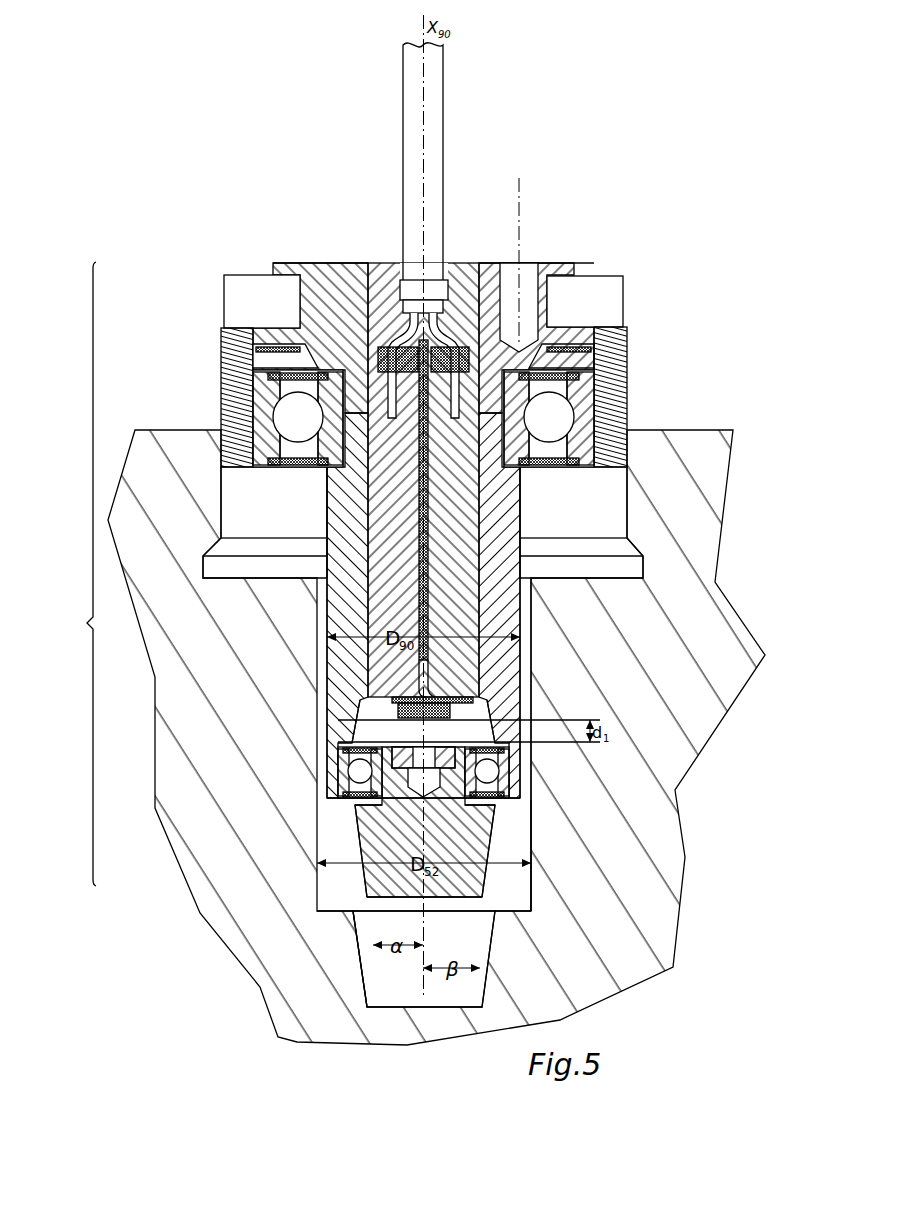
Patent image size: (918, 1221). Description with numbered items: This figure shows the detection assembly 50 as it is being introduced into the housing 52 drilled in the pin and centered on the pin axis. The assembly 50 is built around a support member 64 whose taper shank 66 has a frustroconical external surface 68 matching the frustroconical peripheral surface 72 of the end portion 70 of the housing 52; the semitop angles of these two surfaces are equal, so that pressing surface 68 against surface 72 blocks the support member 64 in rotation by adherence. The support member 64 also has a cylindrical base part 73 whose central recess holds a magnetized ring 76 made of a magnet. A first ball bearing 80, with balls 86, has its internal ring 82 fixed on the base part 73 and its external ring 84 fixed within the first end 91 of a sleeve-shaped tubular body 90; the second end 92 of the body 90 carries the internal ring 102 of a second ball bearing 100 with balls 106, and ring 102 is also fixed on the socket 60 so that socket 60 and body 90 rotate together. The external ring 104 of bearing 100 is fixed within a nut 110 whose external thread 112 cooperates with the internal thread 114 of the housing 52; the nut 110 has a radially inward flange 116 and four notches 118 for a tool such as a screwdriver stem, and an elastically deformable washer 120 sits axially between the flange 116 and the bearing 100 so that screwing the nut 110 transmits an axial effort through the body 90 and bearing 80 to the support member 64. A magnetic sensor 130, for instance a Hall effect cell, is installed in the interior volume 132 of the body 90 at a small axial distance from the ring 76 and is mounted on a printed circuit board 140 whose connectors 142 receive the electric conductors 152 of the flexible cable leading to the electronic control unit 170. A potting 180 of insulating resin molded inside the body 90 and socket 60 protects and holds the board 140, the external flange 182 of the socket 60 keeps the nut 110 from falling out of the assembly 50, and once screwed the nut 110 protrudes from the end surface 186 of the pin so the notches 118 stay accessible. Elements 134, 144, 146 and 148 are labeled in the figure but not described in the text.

The detection assembly 50 is at (80, 574).
The housing 52 is at (507, 857).
The socket 60 is at (548, 268).
The support member 64 is at (128, 838).
The taper shank 66 is at (355, 875).
The external surface 68 is at (355, 880).
The end portion 70 is at (455, 940).
The peripheral surface 72 is at (372, 990).
The cylindrical base part 73 is at (380, 842).
The magnetized ring 76 is at (560, 860).
The first ball bearing 80 is at (340, 762).
The internal ring 82 is at (365, 733).
The external ring 84 is at (500, 775).
The balls 86 is at (520, 800).
The tubular body 90 is at (520, 660).
The first end 91 is at (360, 800).
The second end 92 is at (270, 500).
The second ball bearing 100 is at (600, 383).
The internal ring 102 is at (310, 300).
The external ring 104 is at (245, 378).
The balls 106 is at (598, 398).
The nut 110 is at (240, 416).
The external thread 112 is at (622, 300).
The internal thread 114 is at (612, 500).
The flange 116 is at (596, 268).
The notches 118 is at (240, 300).
The elastically deformable washer 120 is at (258, 348).
The magnetic sensor 130 is at (345, 640).
The interior volume 132 is at (360, 690).
The nut 134 is at (430, 745).
The printed circuit board 140 is at (300, 558).
The connectors 142 is at (455, 265).
The flange 144 is at (530, 590).
The sleeve wall 146 is at (540, 640).
The frame wall 148 is at (600, 680).
The electric conductors 152 is at (388, 420).
The electronic control unit 170 is at (432, 135).
The potting 180 is at (407, 533).
The external flange 182 is at (252, 276).
The end surface 186 is at (692, 428).